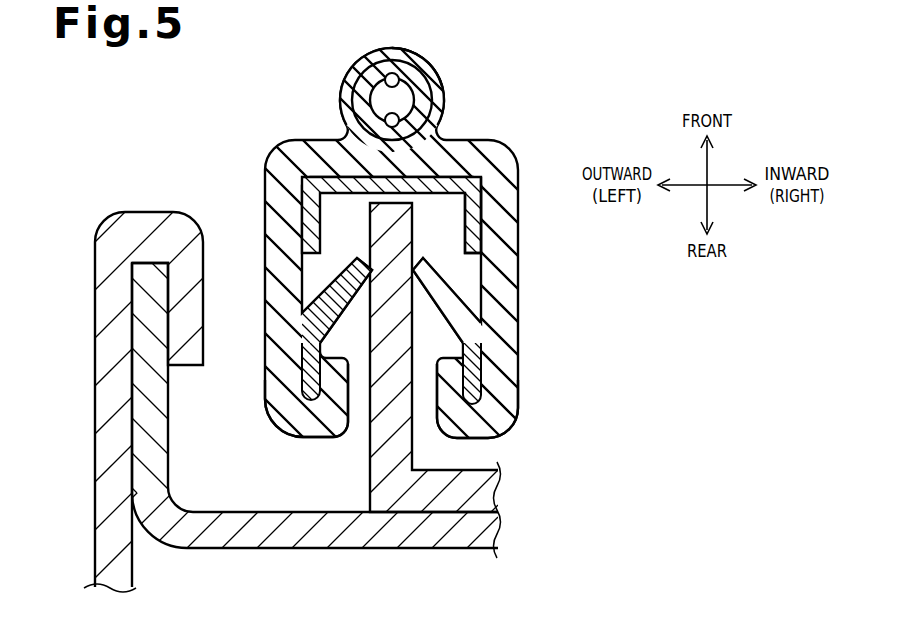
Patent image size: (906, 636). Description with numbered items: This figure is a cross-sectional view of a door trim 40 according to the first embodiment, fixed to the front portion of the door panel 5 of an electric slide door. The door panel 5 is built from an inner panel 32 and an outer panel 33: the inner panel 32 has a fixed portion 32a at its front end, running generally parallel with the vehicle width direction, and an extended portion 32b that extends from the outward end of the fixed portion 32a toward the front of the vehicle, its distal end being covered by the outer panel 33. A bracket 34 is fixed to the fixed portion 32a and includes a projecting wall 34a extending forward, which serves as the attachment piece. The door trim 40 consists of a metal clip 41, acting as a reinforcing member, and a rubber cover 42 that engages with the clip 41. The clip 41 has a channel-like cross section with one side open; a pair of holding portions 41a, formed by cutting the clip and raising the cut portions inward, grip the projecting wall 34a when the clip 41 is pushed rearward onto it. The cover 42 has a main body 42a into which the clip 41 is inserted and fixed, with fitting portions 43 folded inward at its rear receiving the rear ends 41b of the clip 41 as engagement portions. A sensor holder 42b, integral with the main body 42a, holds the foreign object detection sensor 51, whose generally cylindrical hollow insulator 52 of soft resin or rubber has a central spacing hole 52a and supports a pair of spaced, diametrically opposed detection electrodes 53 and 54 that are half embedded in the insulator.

The door panel 5 is at (267, 399).
The inner panel 32 is at (266, 429).
The fixed portion 32a is at (381, 549).
The extended portion 32b is at (138, 297).
The outer panel 33 is at (97, 363).
The bracket 34 is at (411, 394).
The projecting wall 34a is at (368, 397).
The door trim 40 is at (404, 256).
The clip 41 is at (293, 173).
The holding portions 41a is at (350, 280).
The rear ends 41b is at (314, 400).
The cover 42 is at (442, 256).
The main body 42a is at (513, 322).
The sensor holder 42b is at (437, 62).
The fitting portions 43 is at (304, 389).
The foreign object detection sensor 51 is at (399, 97).
The hollow insulator 52 is at (375, 71).
The spacing hole 52a is at (408, 103).
The detection electrode 53 is at (384, 81).
The detection electrode 54 is at (385, 119).